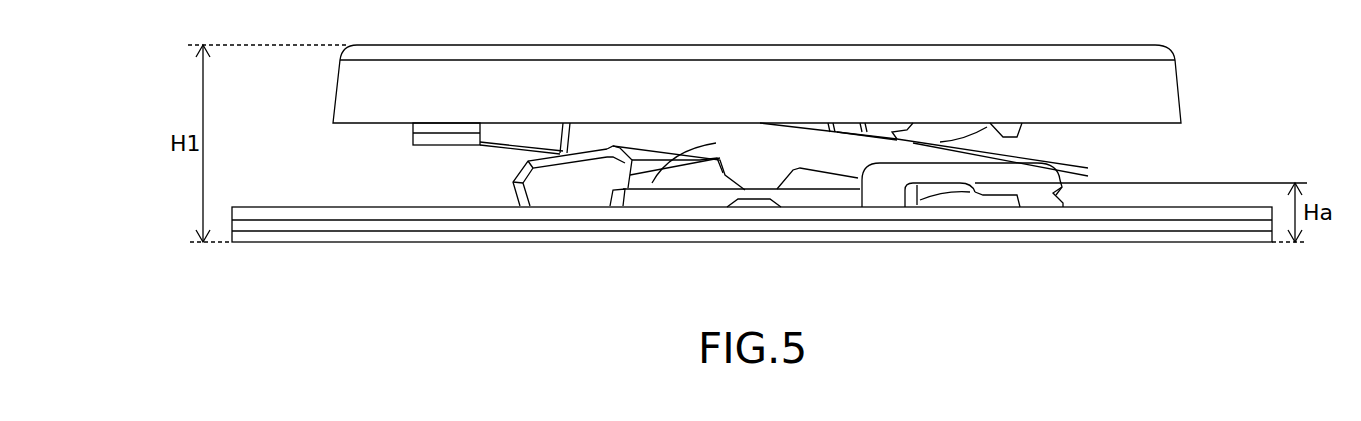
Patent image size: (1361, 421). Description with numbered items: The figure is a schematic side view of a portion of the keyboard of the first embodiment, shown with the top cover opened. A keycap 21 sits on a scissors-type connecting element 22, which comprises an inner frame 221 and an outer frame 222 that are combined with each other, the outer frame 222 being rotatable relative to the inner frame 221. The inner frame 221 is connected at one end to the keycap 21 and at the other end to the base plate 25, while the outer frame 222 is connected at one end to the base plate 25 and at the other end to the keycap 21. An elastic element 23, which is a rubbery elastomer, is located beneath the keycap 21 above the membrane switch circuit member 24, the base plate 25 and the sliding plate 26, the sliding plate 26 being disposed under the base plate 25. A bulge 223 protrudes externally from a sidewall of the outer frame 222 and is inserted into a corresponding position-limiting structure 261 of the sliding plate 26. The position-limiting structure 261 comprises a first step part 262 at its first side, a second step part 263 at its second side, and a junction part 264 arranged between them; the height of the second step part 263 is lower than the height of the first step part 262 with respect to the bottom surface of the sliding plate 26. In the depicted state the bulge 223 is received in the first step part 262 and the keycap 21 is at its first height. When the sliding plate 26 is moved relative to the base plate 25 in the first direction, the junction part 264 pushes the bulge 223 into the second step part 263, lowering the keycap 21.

The keycap 21 is at (1080, 52).
The scissors-type connecting element 22 is at (612, 234).
The inner frame 221 is at (580, 191).
The outer frame 222 is at (643, 188).
The elastic element 23 is at (827, 198).
The bulge 223 is at (920, 197).
The membrane switch circuit member 24 is at (452, 213).
The base plate 25 is at (1213, 227).
The sliding plate 26 is at (1152, 237).
The position-limiting structure 261 is at (1063, 195).
The first step part 262 is at (940, 178).
The second step part 263 is at (1020, 195).
The junction part 264 is at (965, 197).